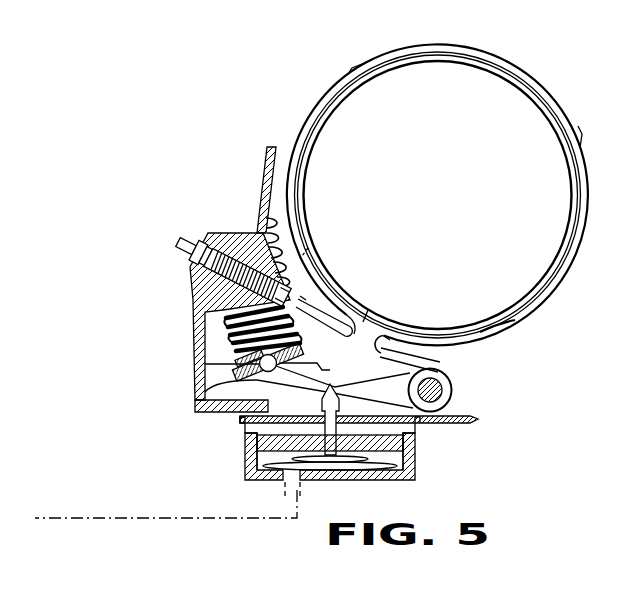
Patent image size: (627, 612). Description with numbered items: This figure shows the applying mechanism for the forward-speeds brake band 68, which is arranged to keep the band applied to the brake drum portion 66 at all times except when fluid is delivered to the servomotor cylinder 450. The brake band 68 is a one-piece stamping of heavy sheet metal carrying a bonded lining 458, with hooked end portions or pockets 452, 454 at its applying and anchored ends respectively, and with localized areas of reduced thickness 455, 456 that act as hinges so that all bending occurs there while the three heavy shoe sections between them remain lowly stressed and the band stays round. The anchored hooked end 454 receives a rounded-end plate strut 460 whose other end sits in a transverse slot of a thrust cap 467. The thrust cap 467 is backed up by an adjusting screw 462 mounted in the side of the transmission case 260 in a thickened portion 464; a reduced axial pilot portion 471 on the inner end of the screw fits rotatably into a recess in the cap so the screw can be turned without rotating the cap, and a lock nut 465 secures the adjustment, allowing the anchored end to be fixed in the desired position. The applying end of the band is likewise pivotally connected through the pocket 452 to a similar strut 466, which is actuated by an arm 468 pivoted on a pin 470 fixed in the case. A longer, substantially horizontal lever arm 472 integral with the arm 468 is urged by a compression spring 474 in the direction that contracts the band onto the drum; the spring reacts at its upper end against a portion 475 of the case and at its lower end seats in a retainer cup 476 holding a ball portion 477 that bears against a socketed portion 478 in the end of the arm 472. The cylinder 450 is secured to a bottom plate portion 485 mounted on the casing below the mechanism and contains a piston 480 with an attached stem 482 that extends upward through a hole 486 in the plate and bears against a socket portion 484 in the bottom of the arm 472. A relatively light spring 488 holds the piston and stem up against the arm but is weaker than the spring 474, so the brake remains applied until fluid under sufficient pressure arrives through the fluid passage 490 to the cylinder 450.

The brake band 68 is at (497, 59).
The brake drum portion 66 is at (332, 108).
The localized area of reduced thickness 456 is at (355, 72).
The localized area of reduced thickness 455 is at (580, 138).
The lining 458 is at (497, 329).
The transmission case 260 is at (266, 150).
The adjusting screw 462 is at (198, 292).
The adjusting screw 464 is at (199, 265).
The portion of the transmission case 475 is at (188, 240).
The lock nut 465 is at (200, 272).
The strut 460 is at (313, 307).
The thrust cap 467 is at (296, 274).
The reduced axial pilot portion 471 is at (311, 249).
The compression spring 474 is at (220, 322).
The retainer cup 476 is at (245, 361).
The socket portion 484 is at (280, 386).
The ball portion 477 is at (215, 384).
The lever arm 472 is at (356, 366).
The pin 470 is at (444, 387).
The arm 468 is at (453, 365).
The strut 466 is at (418, 347).
The hooked end portion 452 is at (380, 337).
The hooked end portion 454 is at (368, 310).
The socketed portion 478 is at (200, 405).
The bottom plate portion 485 is at (458, 418).
The stem 482 is at (321, 408).
The servomotor cylinder 450 is at (328, 448).
The hole 486 is at (262, 430).
The piston 480 is at (385, 434).
The spring 488 is at (362, 483).
The fluid passage 490 is at (276, 520).